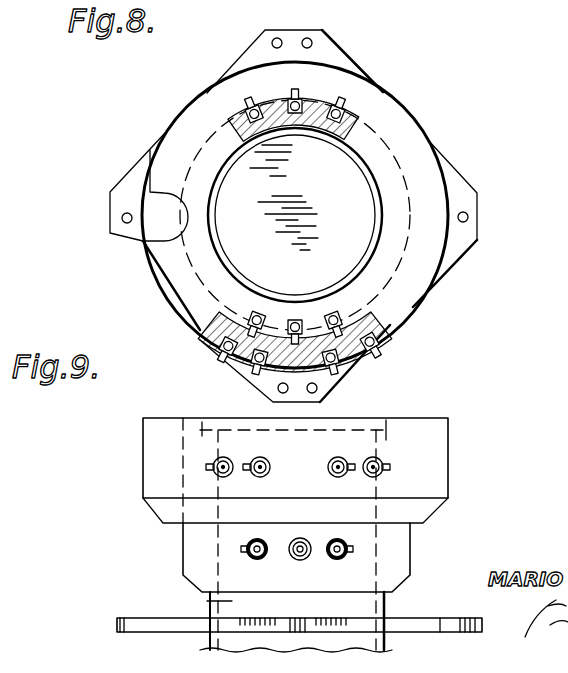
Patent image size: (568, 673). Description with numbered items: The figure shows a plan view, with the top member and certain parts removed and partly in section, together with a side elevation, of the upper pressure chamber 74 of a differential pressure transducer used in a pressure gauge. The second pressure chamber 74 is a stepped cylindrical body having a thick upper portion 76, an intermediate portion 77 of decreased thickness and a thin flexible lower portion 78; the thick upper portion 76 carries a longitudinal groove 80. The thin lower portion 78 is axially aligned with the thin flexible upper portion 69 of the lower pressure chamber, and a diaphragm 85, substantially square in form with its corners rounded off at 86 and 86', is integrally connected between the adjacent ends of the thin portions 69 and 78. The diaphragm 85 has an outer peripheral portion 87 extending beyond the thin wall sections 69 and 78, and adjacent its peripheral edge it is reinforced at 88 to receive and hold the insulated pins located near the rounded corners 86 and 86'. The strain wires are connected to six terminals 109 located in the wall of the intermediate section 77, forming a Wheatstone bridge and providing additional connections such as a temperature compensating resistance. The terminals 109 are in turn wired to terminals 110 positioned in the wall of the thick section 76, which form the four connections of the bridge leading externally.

In FIG. 8, the second pressure chamber 74 is at (182, 106).
In FIG. 9, the second pressure chamber 74 is at (143, 446).
In FIG. 8, the thick upper portion 76 is at (167, 130).
In FIG. 9, the thick upper portion 76 is at (153, 482).
In FIG. 8, the intermediate portion 77 is at (272, 97).
In FIG. 9, the intermediate portion 77 is at (193, 552).
In FIG. 9, the thin flexible lower portion 78 is at (232, 601).
In FIG. 8, the longitudinal groove 80 is at (147, 238).
In FIG. 8, the diaphragm 85 is at (258, 216).
In FIG. 9, the diaphragm 85 is at (126, 617).
In FIG. 8, the rounded corner 86 is at (291, 231).
In FIG. 9, the rounded corner 86 is at (260, 633).
In FIG. 8, the rounded corner 86' is at (295, 208).
In FIG. 9, the rounded corner 86' is at (324, 613).
In FIG. 8, the outer peripheral portion 87 is at (322, 72).
In FIG. 9, the outer peripheral portion 87 is at (447, 617).
In FIG. 9, the reinforcement 88 is at (115, 627).
In FIG. 9, the thin flexible upper portion 69 is at (207, 641).
In FIG. 8, the terminals 109 is at (262, 128).
In FIG. 9, the terminals 109 is at (337, 538).
In FIG. 8, the terminals 110 is at (345, 373).
In FIG. 9, the terminals 110 is at (367, 455).